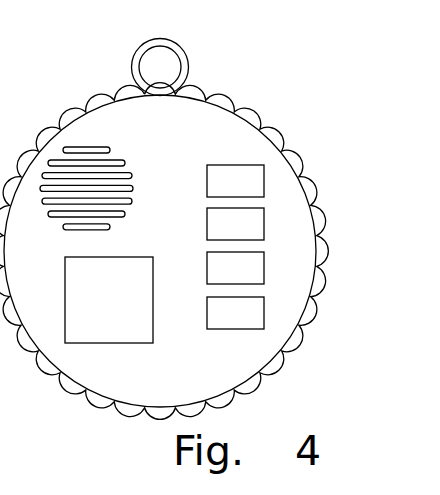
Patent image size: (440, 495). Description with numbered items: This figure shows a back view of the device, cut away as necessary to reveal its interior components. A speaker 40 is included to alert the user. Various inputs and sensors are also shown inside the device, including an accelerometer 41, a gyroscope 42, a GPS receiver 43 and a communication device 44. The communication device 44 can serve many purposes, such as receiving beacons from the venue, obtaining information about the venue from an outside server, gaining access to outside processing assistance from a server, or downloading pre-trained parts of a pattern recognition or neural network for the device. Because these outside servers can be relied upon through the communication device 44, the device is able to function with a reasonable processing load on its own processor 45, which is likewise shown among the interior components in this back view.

The speaker 40 is at (112, 158).
The accelerometer 41 is at (223, 165).
The gyroscope 42 is at (207, 220).
The GPS receiver 43 is at (207, 265).
The communication device 44 is at (233, 330).
The processor 45 is at (107, 345).